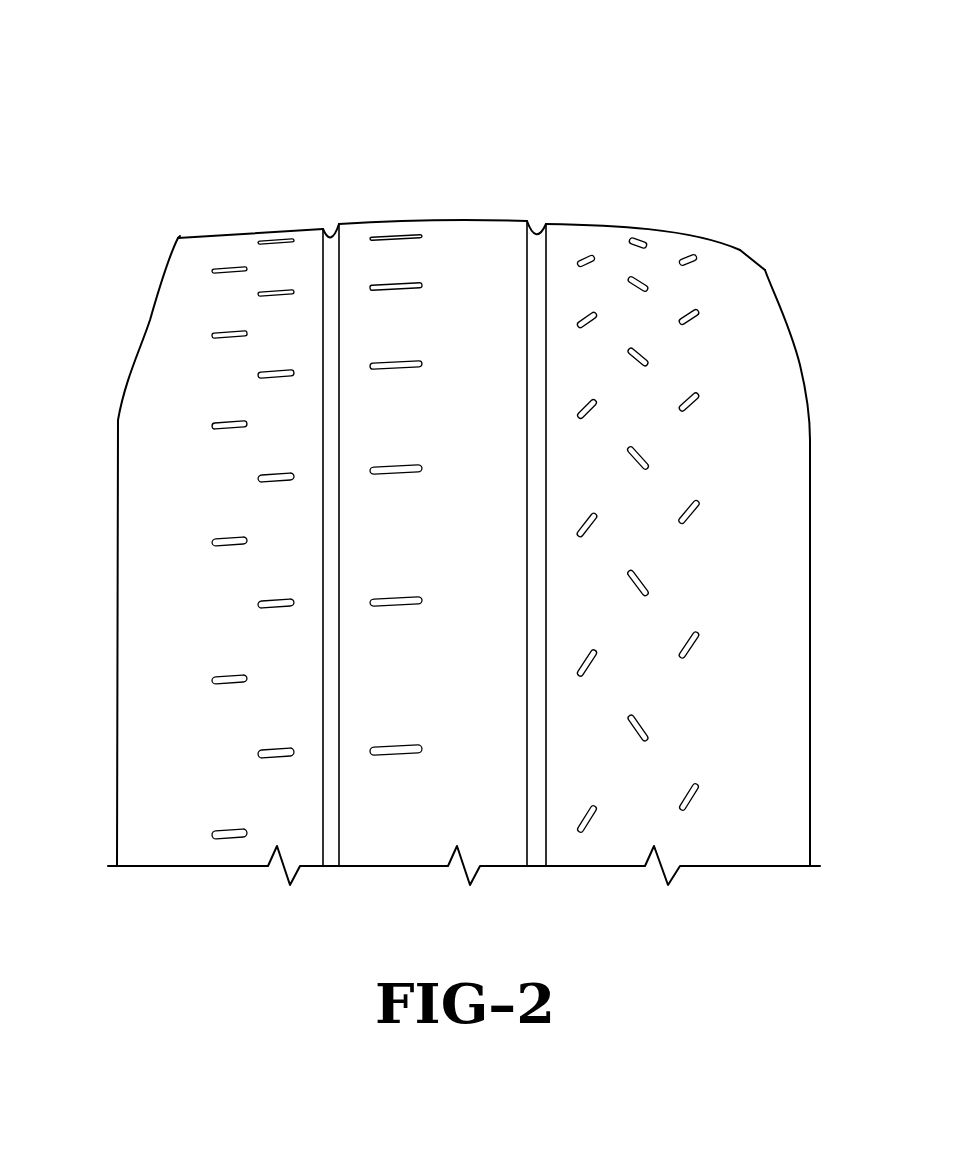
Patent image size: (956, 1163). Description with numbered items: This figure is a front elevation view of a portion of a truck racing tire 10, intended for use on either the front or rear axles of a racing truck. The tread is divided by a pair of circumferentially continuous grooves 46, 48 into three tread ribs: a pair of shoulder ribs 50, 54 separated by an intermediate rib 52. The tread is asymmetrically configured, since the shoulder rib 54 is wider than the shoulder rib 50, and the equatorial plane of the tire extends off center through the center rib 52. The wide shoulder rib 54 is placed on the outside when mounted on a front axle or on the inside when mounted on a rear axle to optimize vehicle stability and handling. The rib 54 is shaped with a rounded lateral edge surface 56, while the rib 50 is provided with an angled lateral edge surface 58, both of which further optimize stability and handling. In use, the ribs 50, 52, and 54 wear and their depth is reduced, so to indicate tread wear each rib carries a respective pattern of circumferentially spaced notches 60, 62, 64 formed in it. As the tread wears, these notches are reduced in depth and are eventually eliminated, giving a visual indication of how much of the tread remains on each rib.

The truck racing tire 10 is at (136, 126).
The circumferentially continuous groove 46 is at (334, 237).
The circumferentially continuous groove 48 is at (537, 235).
The shoulder rib 50 is at (180, 489).
The intermediate rib 52 is at (433, 445).
The shoulder rib 54 is at (707, 486).
The rounded lateral edge surface 56 is at (740, 250).
The angled lateral edge surface 58 is at (178, 238).
The notches 60 is at (265, 477).
The notches 62 is at (398, 364).
The notches 64 is at (633, 452).